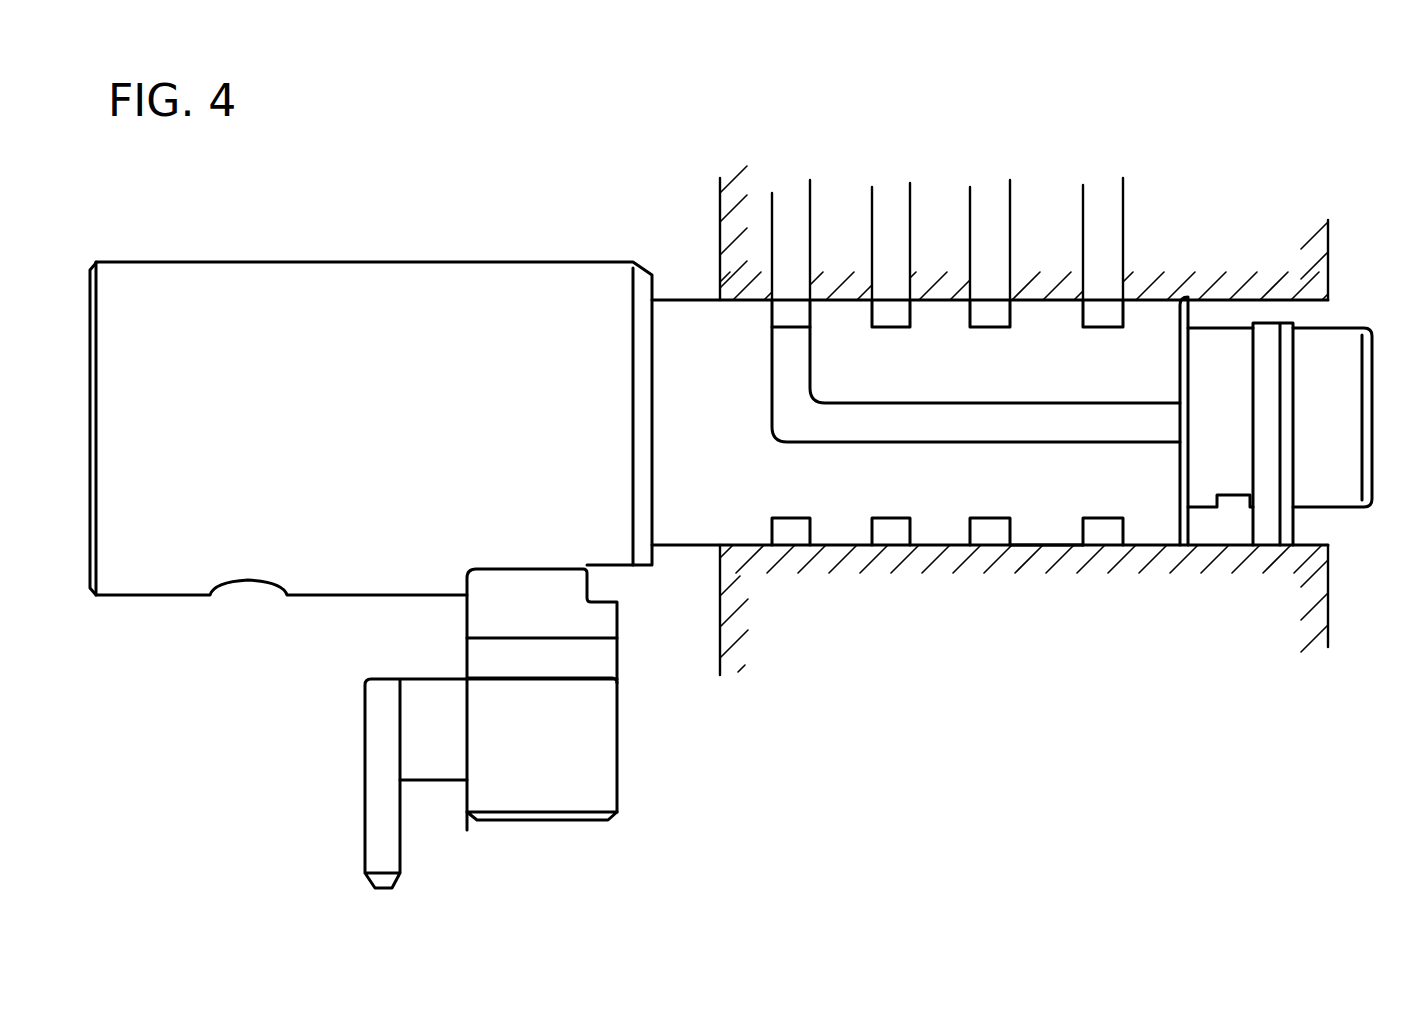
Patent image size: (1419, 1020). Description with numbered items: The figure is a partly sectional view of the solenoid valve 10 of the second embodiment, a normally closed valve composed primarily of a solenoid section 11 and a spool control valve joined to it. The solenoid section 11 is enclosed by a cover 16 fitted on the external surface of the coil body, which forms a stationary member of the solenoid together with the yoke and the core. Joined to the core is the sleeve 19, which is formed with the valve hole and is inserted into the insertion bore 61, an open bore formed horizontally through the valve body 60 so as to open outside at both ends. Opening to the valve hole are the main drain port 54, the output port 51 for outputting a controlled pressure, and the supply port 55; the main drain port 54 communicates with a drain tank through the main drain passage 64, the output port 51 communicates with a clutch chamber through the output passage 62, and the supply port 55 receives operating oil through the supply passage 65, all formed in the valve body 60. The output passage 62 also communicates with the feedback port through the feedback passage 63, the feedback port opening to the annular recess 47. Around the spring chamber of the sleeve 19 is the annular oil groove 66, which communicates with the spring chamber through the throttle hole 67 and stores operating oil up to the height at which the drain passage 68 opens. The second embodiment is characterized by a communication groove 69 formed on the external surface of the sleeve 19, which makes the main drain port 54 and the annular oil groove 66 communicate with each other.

The solenoid valve 10 is at (545, 209).
The solenoid section 11 is at (435, 246).
The cover 16 is at (330, 280).
The sleeve 19 is at (672, 318).
The valve body 60 is at (1192, 220).
The main drain passage 64 is at (800, 246).
The output passage 62 is at (899, 211).
The supply passage 65 is at (1001, 210).
The feedback passage 63 is at (1118, 198).
The main drain port 54 is at (805, 310).
The output port 51 is at (903, 310).
The supply port 55 is at (998, 308).
The annular recess 47 is at (1112, 307).
The drain passage 68 is at (1303, 312).
The communication groove 69 is at (947, 427).
The insertion bore 61 is at (1053, 547).
The annular oil groove 66 is at (1231, 528).
The throttle hole 67 is at (1239, 507).